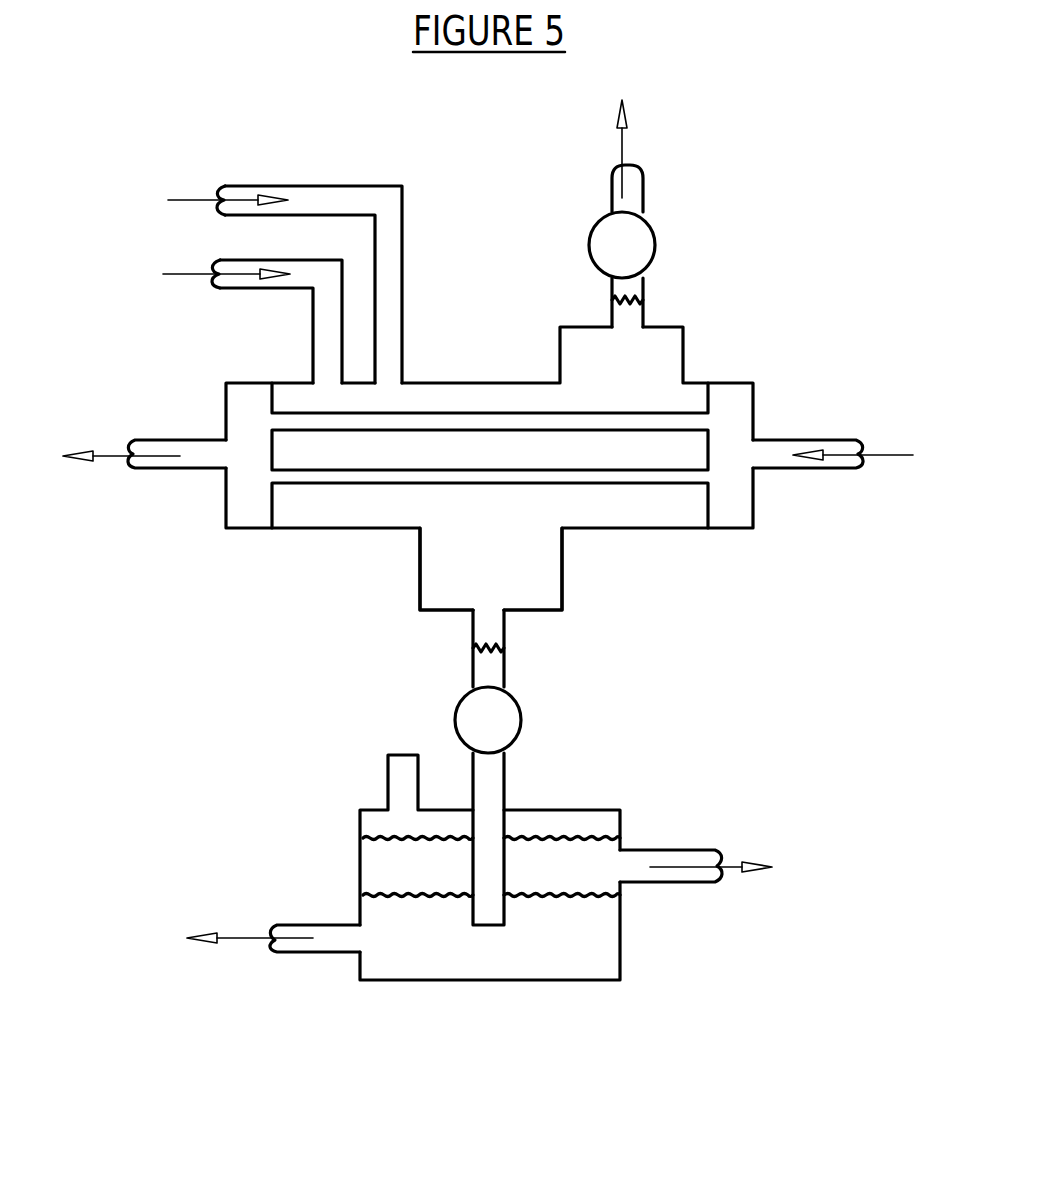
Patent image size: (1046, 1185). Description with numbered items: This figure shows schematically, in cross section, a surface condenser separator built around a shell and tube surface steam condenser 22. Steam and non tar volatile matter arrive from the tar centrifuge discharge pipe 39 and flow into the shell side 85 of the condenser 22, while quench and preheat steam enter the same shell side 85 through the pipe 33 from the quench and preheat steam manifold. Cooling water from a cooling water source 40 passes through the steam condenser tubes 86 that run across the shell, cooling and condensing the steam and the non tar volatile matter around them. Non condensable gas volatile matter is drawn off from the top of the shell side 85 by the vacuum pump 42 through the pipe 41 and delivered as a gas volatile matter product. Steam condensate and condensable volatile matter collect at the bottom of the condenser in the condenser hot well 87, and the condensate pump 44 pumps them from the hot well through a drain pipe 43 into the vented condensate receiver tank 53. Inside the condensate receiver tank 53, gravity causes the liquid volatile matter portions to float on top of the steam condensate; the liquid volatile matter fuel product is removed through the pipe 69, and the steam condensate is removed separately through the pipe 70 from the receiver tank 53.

The surface steam condenser 22 is at (712, 378).
The pipe 33 is at (305, 197).
The tar centrifuge discharge pipe 39 is at (245, 267).
The cooling water source 40 is at (178, 447).
The pipe 41 is at (622, 317).
The vacuum pump 42 is at (643, 242).
The drain pipe 43 is at (490, 670).
The condensate pump 44 is at (502, 727).
The vented condensate receiver tank 53 is at (597, 808).
The pipe 69 is at (663, 873).
The pipe 70 is at (333, 948).
The shell side 85 is at (320, 505).
The steam condenser tubes 86 is at (405, 472).
The condenser hot well 87 is at (523, 588).